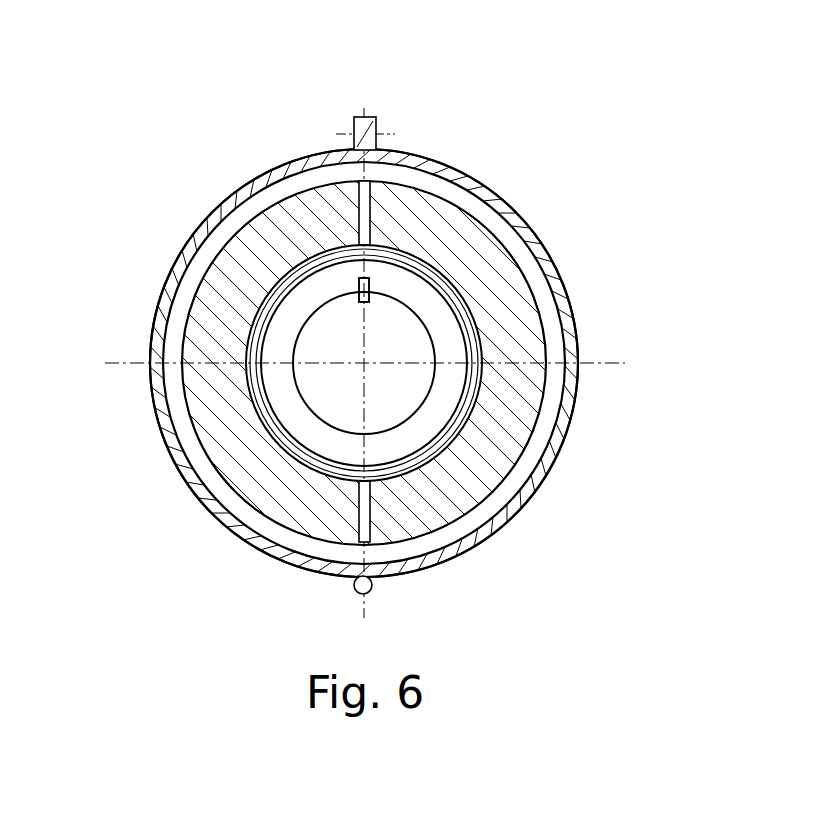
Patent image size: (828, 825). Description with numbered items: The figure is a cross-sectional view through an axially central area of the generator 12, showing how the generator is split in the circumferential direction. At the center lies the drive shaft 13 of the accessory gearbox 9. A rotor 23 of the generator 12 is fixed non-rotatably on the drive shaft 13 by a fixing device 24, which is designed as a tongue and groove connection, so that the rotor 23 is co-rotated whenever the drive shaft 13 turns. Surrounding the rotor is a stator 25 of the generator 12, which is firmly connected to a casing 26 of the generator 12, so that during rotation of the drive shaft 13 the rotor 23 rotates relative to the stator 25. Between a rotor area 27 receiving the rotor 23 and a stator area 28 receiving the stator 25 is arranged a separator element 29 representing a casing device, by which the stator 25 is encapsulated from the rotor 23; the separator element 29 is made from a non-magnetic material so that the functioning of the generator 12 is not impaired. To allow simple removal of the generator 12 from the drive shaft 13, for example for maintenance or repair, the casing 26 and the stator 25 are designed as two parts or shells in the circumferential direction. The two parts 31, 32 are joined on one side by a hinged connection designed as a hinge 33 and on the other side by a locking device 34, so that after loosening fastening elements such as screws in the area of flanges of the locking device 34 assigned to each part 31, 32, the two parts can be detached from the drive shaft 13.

The accessory gearbox 9 is at (157, 154).
The generator 12 is at (254, 170).
The drive shaft 13 is at (388, 386).
The rotor 23 is at (265, 343).
The fixing device 24 is at (370, 284).
The stator 25 is at (512, 311).
The casing 26 is at (538, 228).
The rotor area 27 is at (357, 296).
The stator area 28 is at (358, 184).
The separator element 29 is at (483, 382).
The part 31 is at (165, 245).
The part 32 is at (572, 273).
The hinge 33 is at (353, 588).
The locking device 34 is at (378, 126).